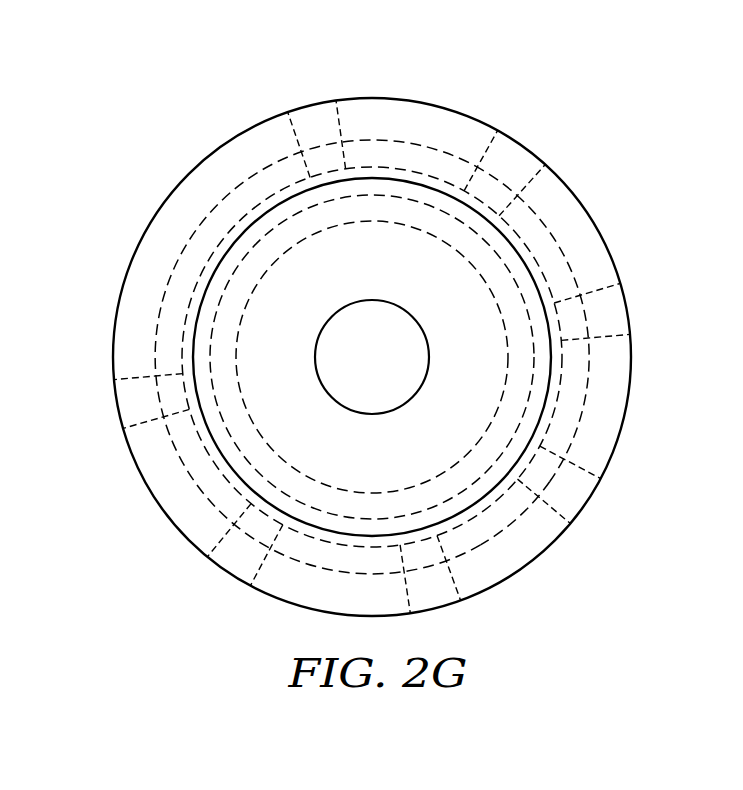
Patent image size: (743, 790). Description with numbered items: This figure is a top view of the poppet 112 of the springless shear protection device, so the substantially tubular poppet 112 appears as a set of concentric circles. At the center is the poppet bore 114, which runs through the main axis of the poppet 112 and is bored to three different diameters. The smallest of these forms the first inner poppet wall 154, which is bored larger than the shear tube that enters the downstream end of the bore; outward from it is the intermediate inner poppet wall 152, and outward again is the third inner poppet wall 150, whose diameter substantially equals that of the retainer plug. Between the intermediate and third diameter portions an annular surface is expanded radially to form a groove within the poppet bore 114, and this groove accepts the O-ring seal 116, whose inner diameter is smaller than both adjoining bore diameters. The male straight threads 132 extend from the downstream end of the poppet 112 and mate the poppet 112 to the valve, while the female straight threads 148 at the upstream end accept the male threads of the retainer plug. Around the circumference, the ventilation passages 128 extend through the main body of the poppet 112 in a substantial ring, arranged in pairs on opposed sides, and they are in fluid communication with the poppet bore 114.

The poppet 112 is at (182, 108).
The poppet bore 114 is at (390, 366).
The O-ring seal 116 is at (398, 158).
The ventilation passages 128 is at (510, 152).
The male straight threads 132 is at (518, 249).
The female straight threads 148 is at (505, 528).
The third inner poppet wall 150 is at (550, 285).
The intermediate inner poppet wall 152 is at (302, 210).
The first inner poppet wall 154 is at (400, 222).